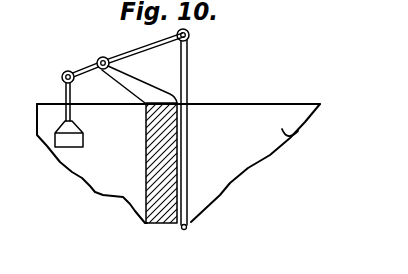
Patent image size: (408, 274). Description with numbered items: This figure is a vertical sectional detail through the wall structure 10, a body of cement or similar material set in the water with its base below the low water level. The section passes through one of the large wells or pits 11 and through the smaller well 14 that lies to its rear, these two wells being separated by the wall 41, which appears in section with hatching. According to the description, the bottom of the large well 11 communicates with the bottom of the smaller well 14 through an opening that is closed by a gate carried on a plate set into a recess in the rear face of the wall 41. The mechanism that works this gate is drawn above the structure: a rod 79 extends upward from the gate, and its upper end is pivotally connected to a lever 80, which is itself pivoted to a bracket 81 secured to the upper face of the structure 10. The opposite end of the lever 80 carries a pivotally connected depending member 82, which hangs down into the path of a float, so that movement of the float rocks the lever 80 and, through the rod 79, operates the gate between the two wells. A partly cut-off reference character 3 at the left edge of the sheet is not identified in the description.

The partial numeral (cut off at sheet edge) 3 is at (5, 77).
The wall structure 10 is at (246, 104).
The large well 11 is at (92, 169).
The smaller well 14 is at (304, 137).
The wall 41 is at (162, 217).
The rod 79 is at (190, 68).
The lever 80 is at (128, 44).
The bracket 81 is at (142, 81).
The depending member 82 is at (56, 133).